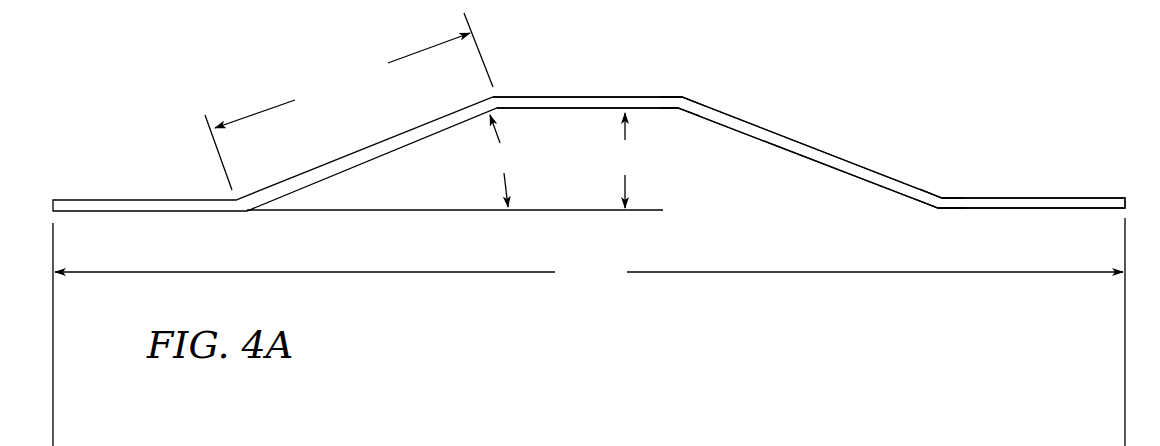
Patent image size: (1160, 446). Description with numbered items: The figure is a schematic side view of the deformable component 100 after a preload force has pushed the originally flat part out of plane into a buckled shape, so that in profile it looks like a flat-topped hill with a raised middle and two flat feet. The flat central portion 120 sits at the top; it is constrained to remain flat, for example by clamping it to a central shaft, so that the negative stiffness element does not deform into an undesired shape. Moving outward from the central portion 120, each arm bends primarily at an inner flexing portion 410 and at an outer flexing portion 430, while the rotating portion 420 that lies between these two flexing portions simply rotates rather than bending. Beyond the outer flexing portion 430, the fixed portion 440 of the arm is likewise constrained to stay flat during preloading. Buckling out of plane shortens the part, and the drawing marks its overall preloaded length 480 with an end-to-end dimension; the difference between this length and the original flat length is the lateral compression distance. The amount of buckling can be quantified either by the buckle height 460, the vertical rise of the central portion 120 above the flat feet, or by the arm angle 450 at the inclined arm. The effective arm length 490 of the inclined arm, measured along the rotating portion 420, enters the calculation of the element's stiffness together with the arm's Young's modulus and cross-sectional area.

The deformable component 100 is at (143, 108).
The central portion 120 is at (583, 80).
The inner flexing portion 410 is at (688, 90).
The rotating portion 420 is at (808, 137).
The outer flexing portion 430 is at (943, 185).
The fixed portion 440 is at (1042, 187).
The arm angle 450 is at (507, 161).
The buckle height 460 is at (629, 160).
The preloaded length 480 is at (589, 332).
The effective arm length 490 is at (349, 101).